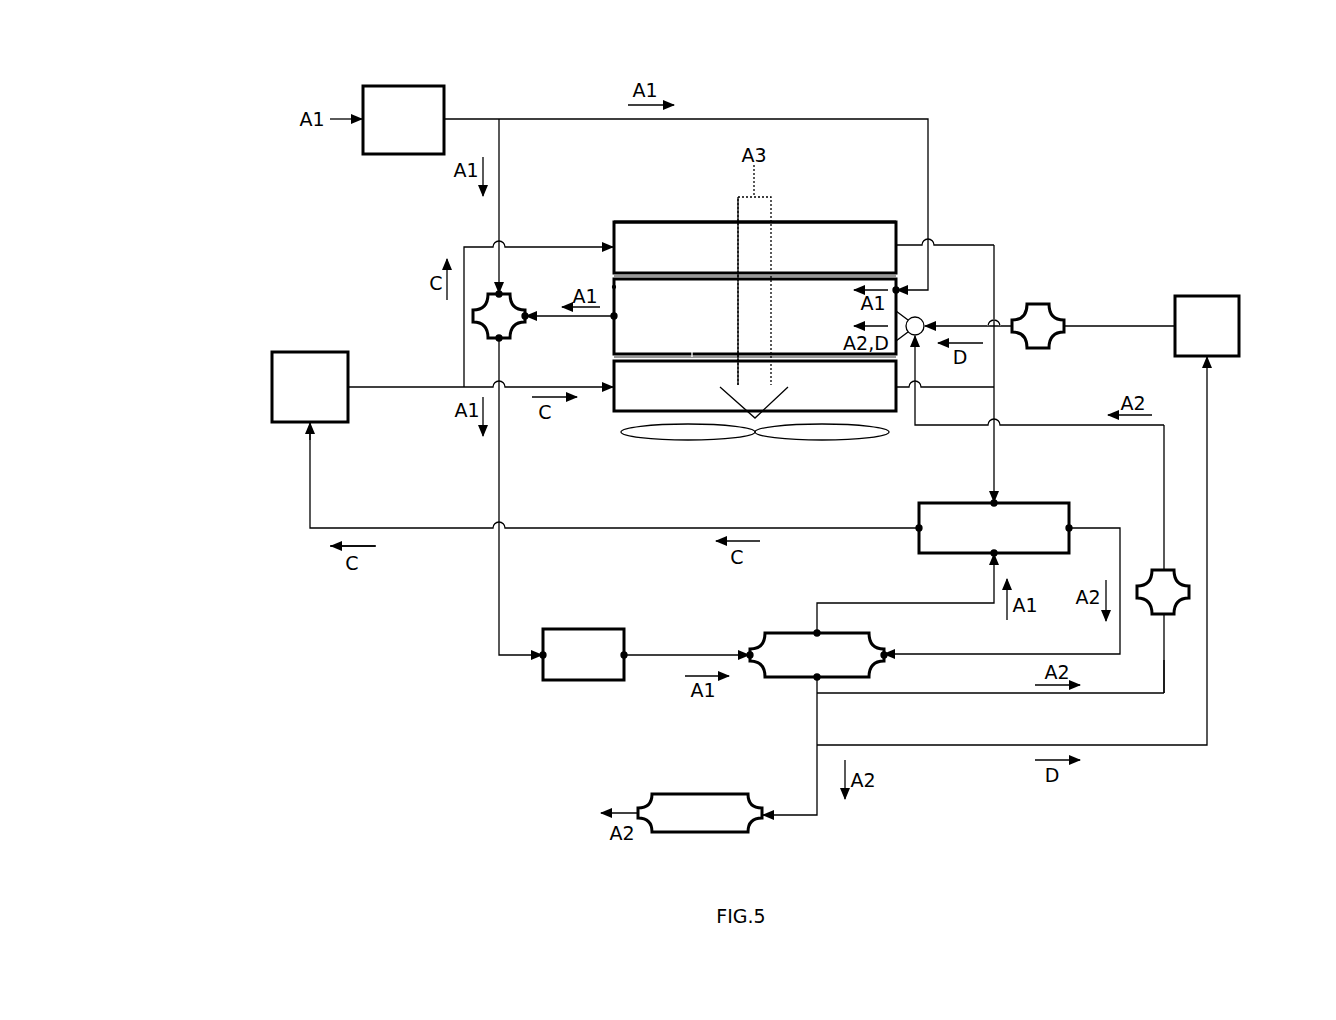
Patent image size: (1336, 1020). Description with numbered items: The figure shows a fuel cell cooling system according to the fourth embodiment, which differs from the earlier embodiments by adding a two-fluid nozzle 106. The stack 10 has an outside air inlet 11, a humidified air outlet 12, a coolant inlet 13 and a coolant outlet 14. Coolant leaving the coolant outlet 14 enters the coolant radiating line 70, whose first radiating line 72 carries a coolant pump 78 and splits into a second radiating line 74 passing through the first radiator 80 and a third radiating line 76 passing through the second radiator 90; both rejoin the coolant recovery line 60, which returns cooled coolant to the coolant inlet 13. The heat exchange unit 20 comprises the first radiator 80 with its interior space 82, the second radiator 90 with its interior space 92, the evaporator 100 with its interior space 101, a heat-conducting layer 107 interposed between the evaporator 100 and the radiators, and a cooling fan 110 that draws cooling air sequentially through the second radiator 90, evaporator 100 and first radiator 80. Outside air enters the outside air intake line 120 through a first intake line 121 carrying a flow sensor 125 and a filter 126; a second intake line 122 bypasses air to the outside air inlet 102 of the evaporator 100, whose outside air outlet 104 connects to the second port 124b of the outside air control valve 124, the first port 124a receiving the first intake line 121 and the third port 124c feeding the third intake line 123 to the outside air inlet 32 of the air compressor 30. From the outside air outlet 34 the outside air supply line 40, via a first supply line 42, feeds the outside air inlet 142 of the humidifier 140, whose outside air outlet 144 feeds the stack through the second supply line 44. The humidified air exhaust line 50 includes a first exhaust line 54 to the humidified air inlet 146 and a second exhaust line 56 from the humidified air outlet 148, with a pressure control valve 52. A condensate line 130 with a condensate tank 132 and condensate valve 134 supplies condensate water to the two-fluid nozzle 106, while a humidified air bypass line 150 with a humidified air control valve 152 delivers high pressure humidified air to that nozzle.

The fuel cell stack 10 is at (995, 518).
The outside air inlet 11 is at (996, 553).
The humidified air outlet 12 is at (1069, 527).
The coolant inlet 13 is at (996, 503).
The coolant outlet 14 is at (919, 527).
The heat exchange unit 20 is at (738, 281).
The air compressor 30 is at (581, 682).
The outside air inlet 32 is at (543, 656).
The outside air outlet 34 is at (624, 656).
The outside air supply line 40 is at (686, 613).
The first supply line 42 is at (690, 655).
The second supply line 44 is at (862, 603).
The humidified air exhaust line 50 is at (1106, 672).
The pressure control valve 52 is at (700, 832).
The first exhaust line 54 is at (922, 655).
The second exhaust line 56 is at (793, 815).
The coolant recovery line 60 is at (994, 392).
The coolant radiating line 70 is at (419, 546).
The first radiating line 72 is at (358, 528).
The second radiating line 74 is at (600, 389).
The third radiating line 76 is at (464, 345).
The coolant pump 78 is at (272, 387).
The first radiator 80 is at (898, 401).
The interior space 82 is at (755, 386).
The second radiator 90 is at (650, 222).
The interior space 92 is at (755, 247).
The evaporator 100 is at (613, 287).
The interior space 101 is at (755, 316).
The outside air inlet 102 is at (898, 285).
The outside air outlet 104 is at (614, 316).
The two-fluid nozzle 106 is at (924, 319).
The heat-conducting layer 107 is at (692, 357).
The cooling fan 110 is at (687, 440).
The outside air intake line 120 is at (482, 234).
The first intake line 121 is at (500, 170).
The second intake line 122 is at (527, 119).
The third intake line 123 is at (499, 445).
The outside air control valve 124 is at (503, 319).
The first port 124a is at (502, 293).
The second port 124b is at (527, 319).
The third port 124c is at (501, 339).
The flow sensor 125 is at (403, 91).
The filter 126 is at (402, 86).
The condensate line 130 is at (975, 745).
The condensate tank 132 is at (1207, 296).
The condensate valve 134 is at (1038, 304).
The humidifier 140 is at (816, 655).
The outside air inlet 142 is at (750, 655).
The outside air outlet 144 is at (817, 633).
The humidified air inlet 146 is at (884, 655).
The humidified air outlet 148 is at (817, 677).
The humidified air bypass line 150 is at (972, 693).
The humidified air control valve 152 is at (1190, 592).